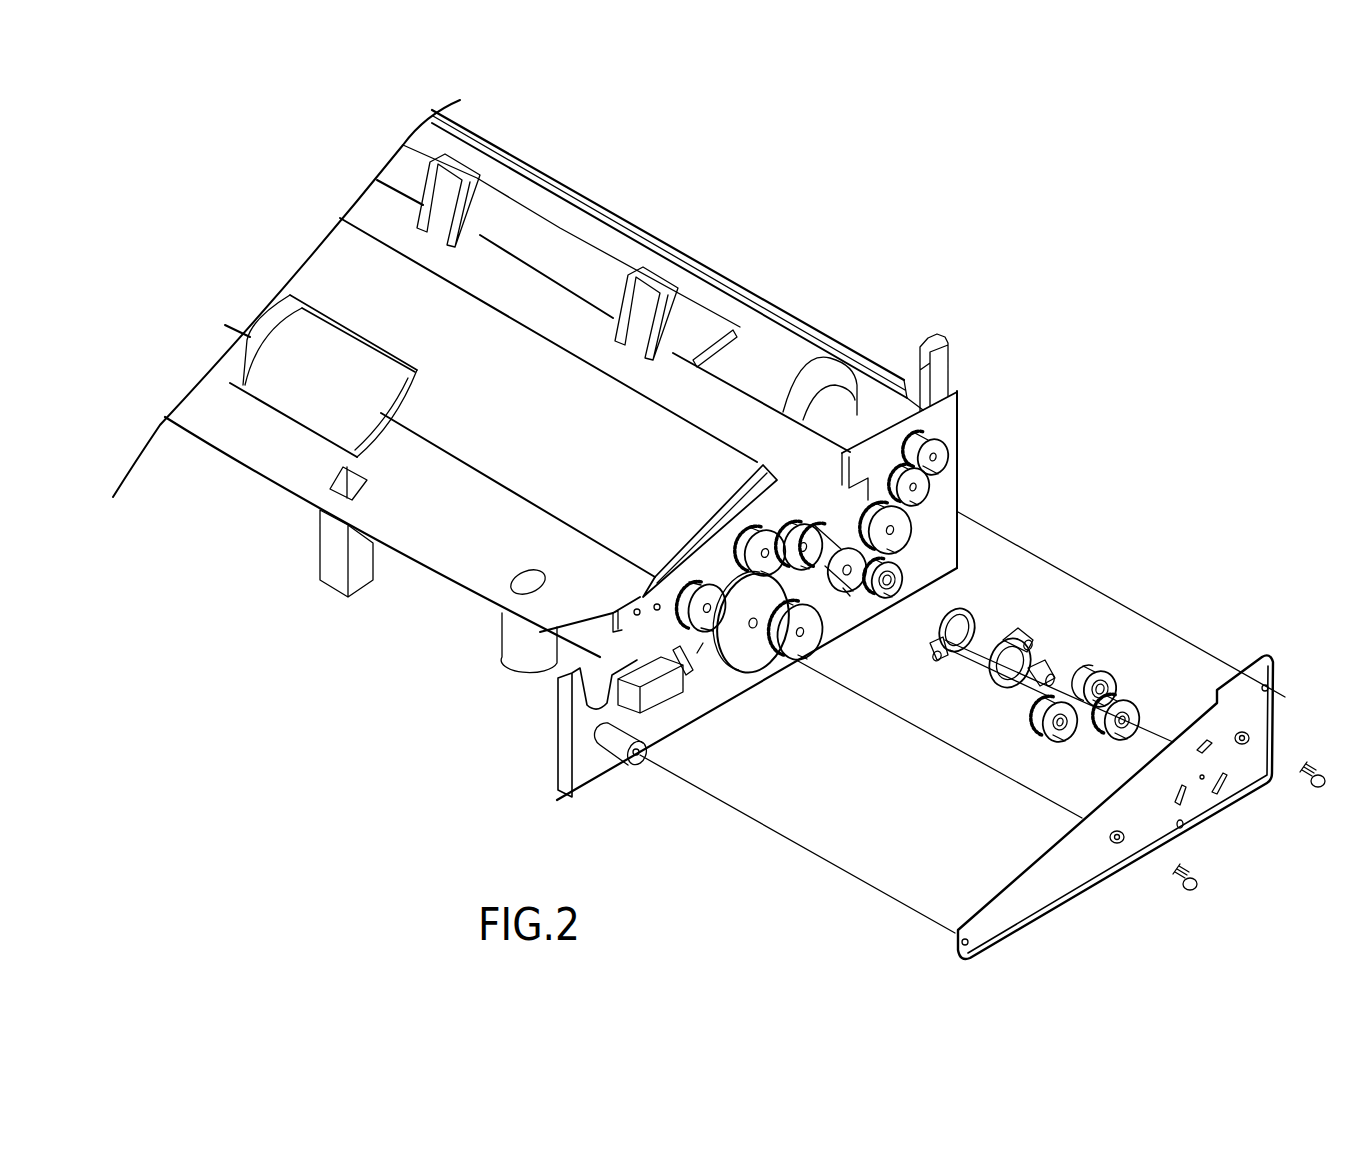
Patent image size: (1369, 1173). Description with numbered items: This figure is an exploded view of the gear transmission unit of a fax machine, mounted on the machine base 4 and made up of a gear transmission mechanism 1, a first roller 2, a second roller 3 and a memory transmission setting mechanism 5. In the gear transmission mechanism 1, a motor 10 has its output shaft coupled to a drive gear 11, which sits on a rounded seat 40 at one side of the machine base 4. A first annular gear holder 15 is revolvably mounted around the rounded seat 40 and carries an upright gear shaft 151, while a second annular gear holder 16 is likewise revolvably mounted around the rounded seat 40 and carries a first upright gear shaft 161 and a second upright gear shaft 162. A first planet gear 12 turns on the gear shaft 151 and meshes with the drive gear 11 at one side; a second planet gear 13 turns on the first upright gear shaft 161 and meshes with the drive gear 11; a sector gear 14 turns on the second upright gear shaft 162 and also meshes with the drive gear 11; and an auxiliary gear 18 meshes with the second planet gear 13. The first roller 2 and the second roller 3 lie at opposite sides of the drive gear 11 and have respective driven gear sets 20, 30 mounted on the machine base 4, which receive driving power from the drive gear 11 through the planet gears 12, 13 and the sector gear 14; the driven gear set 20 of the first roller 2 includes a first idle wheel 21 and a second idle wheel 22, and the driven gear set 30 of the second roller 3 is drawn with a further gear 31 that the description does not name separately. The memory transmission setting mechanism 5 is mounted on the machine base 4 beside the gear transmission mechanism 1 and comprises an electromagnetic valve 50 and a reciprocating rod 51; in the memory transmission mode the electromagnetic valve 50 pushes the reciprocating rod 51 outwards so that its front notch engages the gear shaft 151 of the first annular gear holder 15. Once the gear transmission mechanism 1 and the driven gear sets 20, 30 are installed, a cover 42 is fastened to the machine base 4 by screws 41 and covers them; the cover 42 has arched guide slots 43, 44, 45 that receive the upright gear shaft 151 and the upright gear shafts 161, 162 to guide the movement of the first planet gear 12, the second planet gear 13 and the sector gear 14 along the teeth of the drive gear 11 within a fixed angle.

The gear transmission mechanism 1 is at (1070, 624).
The first roller 2 is at (318, 387).
The second roller 3 is at (748, 318).
The machine base 4 is at (587, 780).
The memory transmission setting mechanism 5 is at (690, 716).
The motor 10 is at (840, 403).
The drive gear 11 is at (843, 588).
The first planet gear 12 is at (1057, 746).
The second planet gear 13 is at (1128, 707).
The sector gear 14 is at (1105, 673).
The first annular gear holder 15 is at (1036, 653).
The upright gear shaft 151 is at (943, 657).
The second annular gear holder 16 is at (1051, 665).
The first upright gear shaft 161 is at (1047, 667).
The second upright gear shaft 162 is at (1025, 642).
The auxiliary gear 18 is at (905, 548).
The driven gear set 20 is at (775, 688).
The first idle wheel 21 is at (790, 517).
The second idle wheel 22 is at (757, 627).
The driven gear set 30 is at (952, 428).
The gear 31 is at (913, 490).
The rounded seat 40 is at (830, 530).
The screws 41 is at (1193, 890).
The cover 42 is at (1146, 788).
The arched guide slot 43 is at (1183, 803).
The arched guide slot 44 is at (1225, 787).
The arched guide slot 45 is at (1203, 745).
The electromagnetic valve 50 is at (653, 693).
The reciprocating rod 51 is at (703, 660).